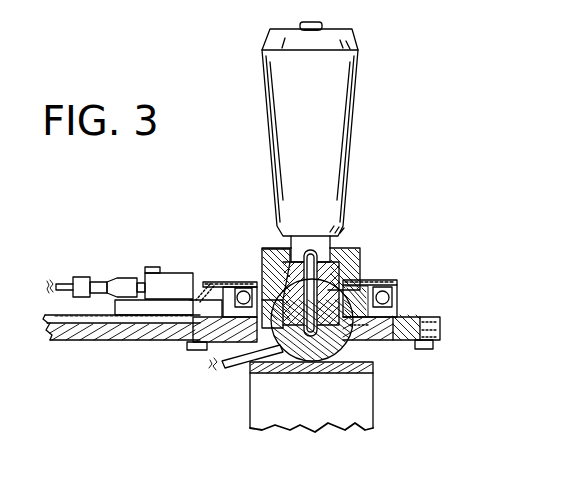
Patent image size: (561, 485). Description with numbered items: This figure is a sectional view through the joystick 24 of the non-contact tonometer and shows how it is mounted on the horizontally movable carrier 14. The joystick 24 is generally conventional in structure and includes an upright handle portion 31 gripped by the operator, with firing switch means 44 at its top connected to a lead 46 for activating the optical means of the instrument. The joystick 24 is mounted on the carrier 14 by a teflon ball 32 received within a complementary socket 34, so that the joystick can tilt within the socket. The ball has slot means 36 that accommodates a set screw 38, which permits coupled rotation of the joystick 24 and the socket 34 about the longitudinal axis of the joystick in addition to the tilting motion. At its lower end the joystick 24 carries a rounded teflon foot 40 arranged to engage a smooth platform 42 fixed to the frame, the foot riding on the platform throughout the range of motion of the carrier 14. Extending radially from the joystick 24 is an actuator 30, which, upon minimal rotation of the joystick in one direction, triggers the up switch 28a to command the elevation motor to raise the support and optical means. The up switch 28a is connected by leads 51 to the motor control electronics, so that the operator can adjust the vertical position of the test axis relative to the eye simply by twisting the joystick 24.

The carrier 14 is at (73, 343).
The joystick 24 is at (376, 124).
The up switch 28a is at (165, 268).
The actuator 30 is at (205, 284).
The handle portion 31 is at (313, 135).
The teflon ball 32 is at (365, 277).
The socket 34 is at (362, 258).
The slot means 36 is at (360, 343).
The set screw 38 is at (367, 340).
The rounded teflon foot 40 is at (311, 398).
The smooth platform 42 is at (262, 372).
The firing switch means 44 is at (322, 25).
The lead 46 is at (232, 364).
The leads 51 is at (68, 280).